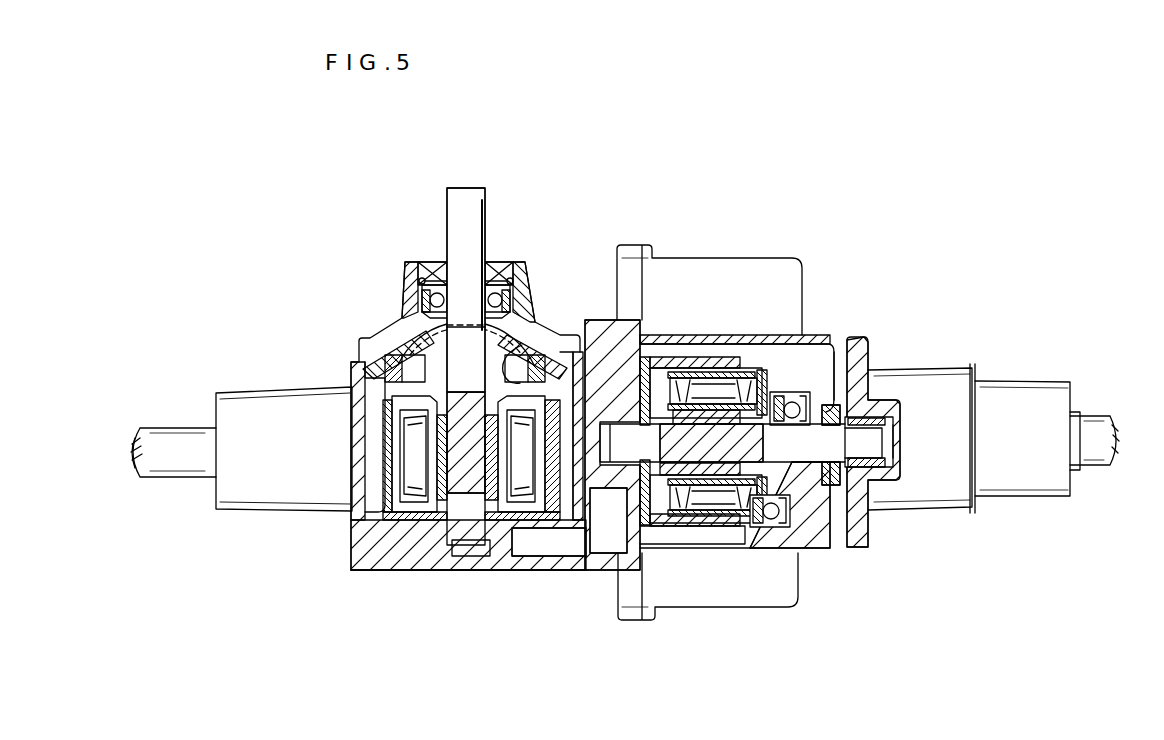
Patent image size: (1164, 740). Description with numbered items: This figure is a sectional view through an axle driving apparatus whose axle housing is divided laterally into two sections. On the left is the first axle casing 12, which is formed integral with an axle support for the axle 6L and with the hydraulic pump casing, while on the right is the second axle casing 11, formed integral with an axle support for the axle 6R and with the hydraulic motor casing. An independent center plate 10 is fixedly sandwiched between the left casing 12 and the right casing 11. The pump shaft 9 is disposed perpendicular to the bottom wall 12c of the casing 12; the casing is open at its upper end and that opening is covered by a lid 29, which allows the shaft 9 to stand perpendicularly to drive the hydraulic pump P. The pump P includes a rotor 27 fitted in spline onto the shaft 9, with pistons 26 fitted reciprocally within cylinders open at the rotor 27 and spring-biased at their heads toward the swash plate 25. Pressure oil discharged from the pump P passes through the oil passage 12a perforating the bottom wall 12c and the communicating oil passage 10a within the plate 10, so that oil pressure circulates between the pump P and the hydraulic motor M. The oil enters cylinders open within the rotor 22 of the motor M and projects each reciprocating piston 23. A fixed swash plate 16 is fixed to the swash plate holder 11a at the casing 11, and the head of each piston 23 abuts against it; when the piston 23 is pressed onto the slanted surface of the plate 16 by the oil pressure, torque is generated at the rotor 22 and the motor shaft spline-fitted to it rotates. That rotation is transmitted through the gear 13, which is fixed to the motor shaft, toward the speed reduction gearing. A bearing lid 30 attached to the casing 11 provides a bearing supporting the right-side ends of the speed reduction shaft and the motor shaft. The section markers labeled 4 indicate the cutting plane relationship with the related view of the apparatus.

The section line IV-IV 4 is at (108, 457).
The axle 6L is at (166, 470).
The axle 6R is at (1086, 478).
The pump shaft 9 is at (486, 208).
The center plate 10 is at (603, 320).
The oil passage 10a is at (612, 553).
The second axle casing 11 is at (729, 330).
The swash plate holder 11a is at (812, 344).
The first axle casing 12 is at (350, 404).
The oil passage 12a is at (535, 556).
The bottom wall 12c is at (400, 565).
The gear 13 is at (829, 488).
The fixed swash plate 16 is at (777, 500).
The rotor 22 is at (676, 352).
The piston 23 is at (776, 392).
The swash plate 25 is at (522, 345).
The piston 26 is at (400, 405).
The rotor 27 is at (350, 462).
The lid 29 is at (522, 268).
The bearing lid 30 is at (878, 360).
The hydraulic motor M is at (803, 298).
The hydraulic pump P is at (362, 313).